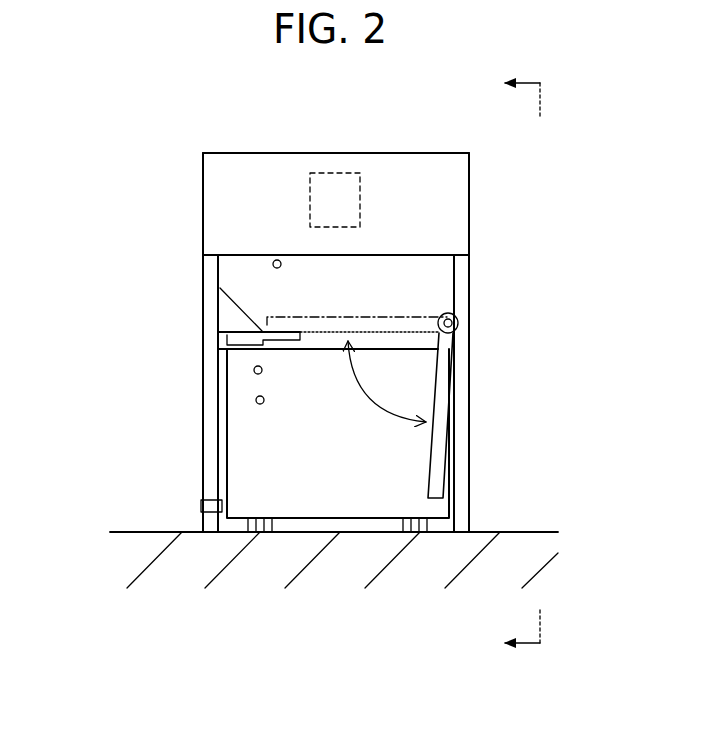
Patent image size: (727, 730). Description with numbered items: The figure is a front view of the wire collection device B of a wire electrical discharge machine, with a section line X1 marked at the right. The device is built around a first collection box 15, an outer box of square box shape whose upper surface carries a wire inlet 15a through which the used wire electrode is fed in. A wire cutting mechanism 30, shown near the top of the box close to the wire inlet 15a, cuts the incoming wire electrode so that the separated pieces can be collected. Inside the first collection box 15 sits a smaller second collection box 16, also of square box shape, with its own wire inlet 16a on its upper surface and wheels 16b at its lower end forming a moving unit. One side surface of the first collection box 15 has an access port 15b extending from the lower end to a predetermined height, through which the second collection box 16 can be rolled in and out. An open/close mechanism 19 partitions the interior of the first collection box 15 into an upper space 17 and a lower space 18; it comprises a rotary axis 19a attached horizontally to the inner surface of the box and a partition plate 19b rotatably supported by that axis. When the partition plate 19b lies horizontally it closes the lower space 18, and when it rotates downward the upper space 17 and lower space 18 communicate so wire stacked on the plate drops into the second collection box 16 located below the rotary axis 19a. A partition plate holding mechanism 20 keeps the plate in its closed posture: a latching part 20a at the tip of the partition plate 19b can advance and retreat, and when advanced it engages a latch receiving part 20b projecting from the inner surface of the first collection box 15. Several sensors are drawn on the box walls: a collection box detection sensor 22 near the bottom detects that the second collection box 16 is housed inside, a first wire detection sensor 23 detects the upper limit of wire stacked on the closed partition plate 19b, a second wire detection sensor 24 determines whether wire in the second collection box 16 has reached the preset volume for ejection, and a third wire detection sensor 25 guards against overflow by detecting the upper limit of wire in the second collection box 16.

The wire collection device B is at (558, 158).
The first collection box 15 is at (472, 232).
The wire inlet 15a is at (262, 150).
The access port 15b is at (326, 492).
The second collection box 16 is at (224, 421).
The wire inlet 16a is at (320, 346).
The wheels 16b is at (258, 533).
The upper space 17 is at (432, 288).
The lower space 18 is at (402, 446).
The open/close mechanism 19 is at (457, 349).
The rotary axis 19a is at (458, 323).
The partition plate 19b is at (442, 407).
The partition plate holding mechanism 20 is at (241, 361).
The latching part 20a is at (282, 345).
The latch receiving part 20b is at (236, 329).
The collection box detection sensor 22 is at (202, 505).
The first wire detection sensor 23 is at (275, 260).
The second wire detection sensor 24 is at (260, 404).
The third wire detection sensor 25 is at (255, 368).
The wire cutting mechanism 30 is at (307, 186).
The section line X1 is at (505, 361).